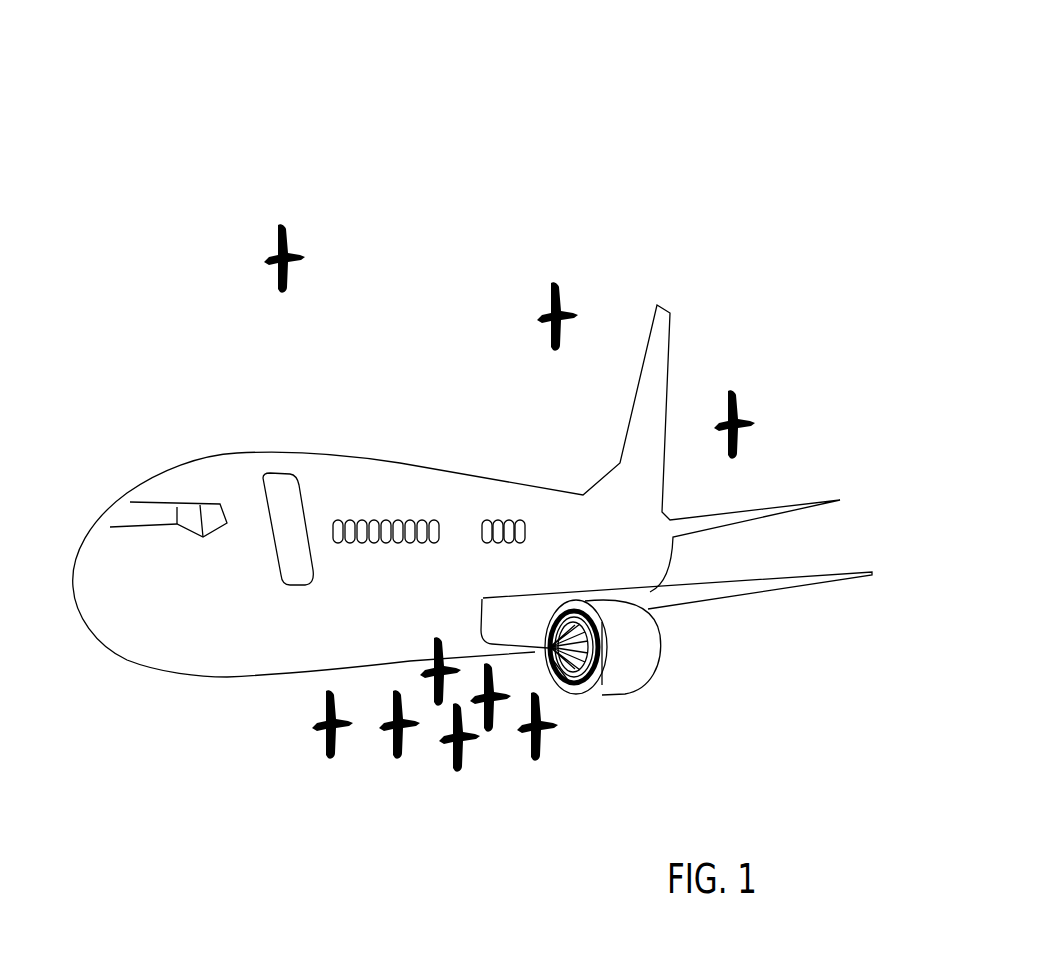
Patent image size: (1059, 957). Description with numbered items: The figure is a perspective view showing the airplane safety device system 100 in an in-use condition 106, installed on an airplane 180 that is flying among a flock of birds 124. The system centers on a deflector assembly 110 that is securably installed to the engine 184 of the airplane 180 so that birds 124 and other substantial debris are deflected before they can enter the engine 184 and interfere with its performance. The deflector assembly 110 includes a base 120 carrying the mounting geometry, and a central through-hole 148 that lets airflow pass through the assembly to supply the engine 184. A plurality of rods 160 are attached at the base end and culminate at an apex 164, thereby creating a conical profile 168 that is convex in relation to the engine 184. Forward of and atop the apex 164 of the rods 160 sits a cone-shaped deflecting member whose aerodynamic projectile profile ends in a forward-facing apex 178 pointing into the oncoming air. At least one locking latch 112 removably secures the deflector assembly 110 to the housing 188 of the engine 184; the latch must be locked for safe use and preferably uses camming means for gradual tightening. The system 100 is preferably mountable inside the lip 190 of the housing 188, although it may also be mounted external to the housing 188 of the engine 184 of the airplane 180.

The airplane safety device system 100 is at (642, 108).
The in-use condition 106 is at (668, 157).
The deflector assembly 110 is at (547, 644).
The locking latch 112 is at (589, 684).
The base 120 is at (576, 699).
The bird 124 is at (547, 760).
The through-hole 148 is at (582, 694).
The rod 160 is at (600, 621).
The apex 164 is at (540, 640).
The conical profile 168 is at (563, 693).
The forward-facing apex 178 is at (532, 653).
The airplane 180 is at (460, 473).
The engine 184 is at (633, 663).
The housing 188 is at (638, 640).
The lip 190 is at (655, 615).